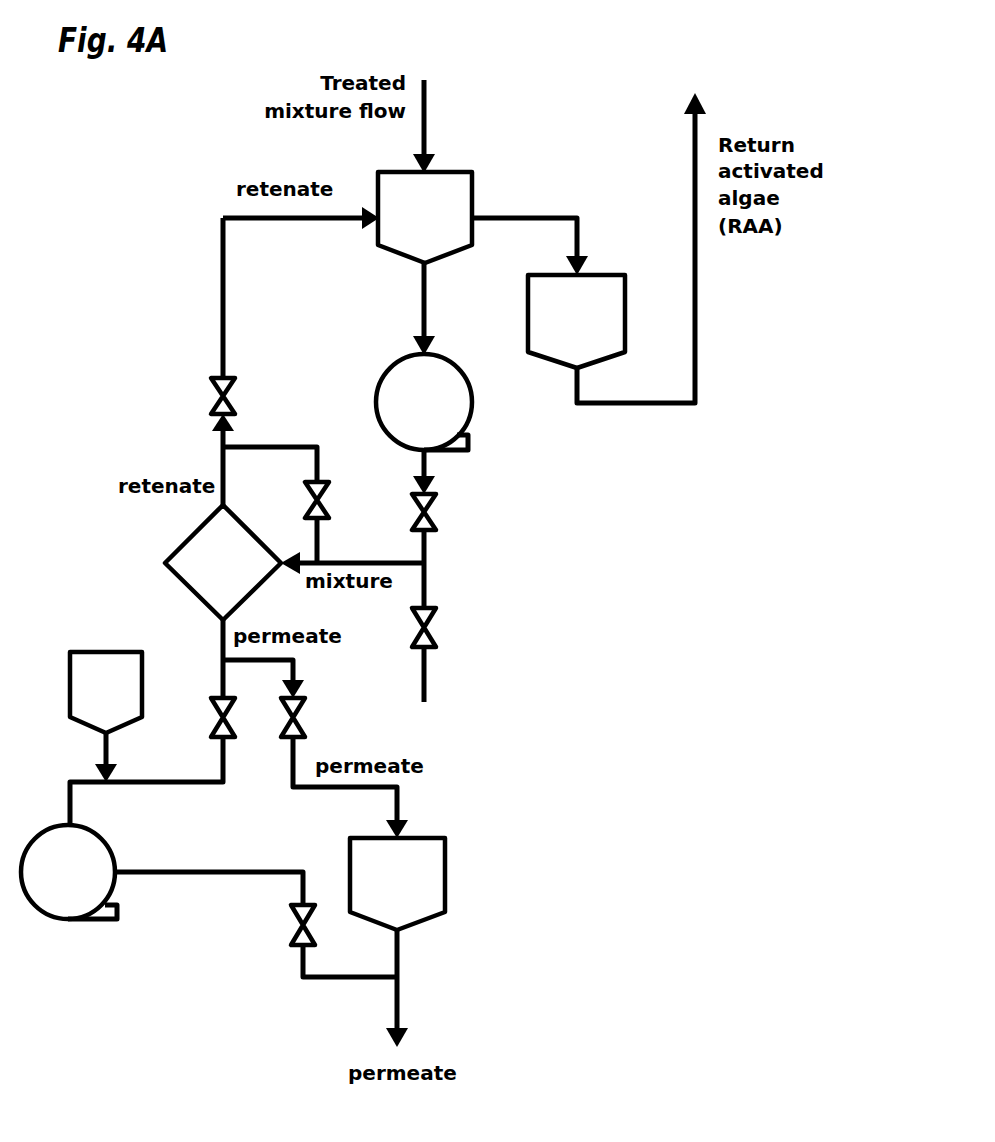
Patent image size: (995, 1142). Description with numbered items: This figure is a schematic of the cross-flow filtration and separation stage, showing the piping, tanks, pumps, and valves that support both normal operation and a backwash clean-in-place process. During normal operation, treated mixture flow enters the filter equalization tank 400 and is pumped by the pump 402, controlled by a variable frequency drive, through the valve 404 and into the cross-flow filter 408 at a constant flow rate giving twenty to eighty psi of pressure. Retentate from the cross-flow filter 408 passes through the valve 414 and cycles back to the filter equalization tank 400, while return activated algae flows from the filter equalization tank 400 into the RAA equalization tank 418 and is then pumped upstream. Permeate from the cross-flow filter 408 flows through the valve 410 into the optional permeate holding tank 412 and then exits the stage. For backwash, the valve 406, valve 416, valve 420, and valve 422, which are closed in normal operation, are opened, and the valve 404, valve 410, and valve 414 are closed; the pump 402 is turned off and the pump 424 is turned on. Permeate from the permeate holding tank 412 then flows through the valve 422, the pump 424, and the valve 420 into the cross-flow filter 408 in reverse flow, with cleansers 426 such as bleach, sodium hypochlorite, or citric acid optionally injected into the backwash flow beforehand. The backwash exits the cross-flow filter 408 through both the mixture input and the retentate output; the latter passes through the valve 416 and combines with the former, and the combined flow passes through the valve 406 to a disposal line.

The filter equalization tank 400 is at (425, 217).
The pump 402 is at (424, 402).
The valve 404 is at (437, 521).
The valve 406 is at (437, 638).
The cross-flow filter 408 is at (223, 562).
The valve 410 is at (306, 728).
The permeate holding tank 412 is at (397, 884).
The valve 414 is at (215, 392).
The valve 416 is at (327, 506).
The RAA equalization tank 418 is at (576, 321).
The valve 420 is at (212, 706).
The valve 422 is at (290, 933).
The pump 424 is at (68, 872).
The cleansers 426 is at (106, 692).